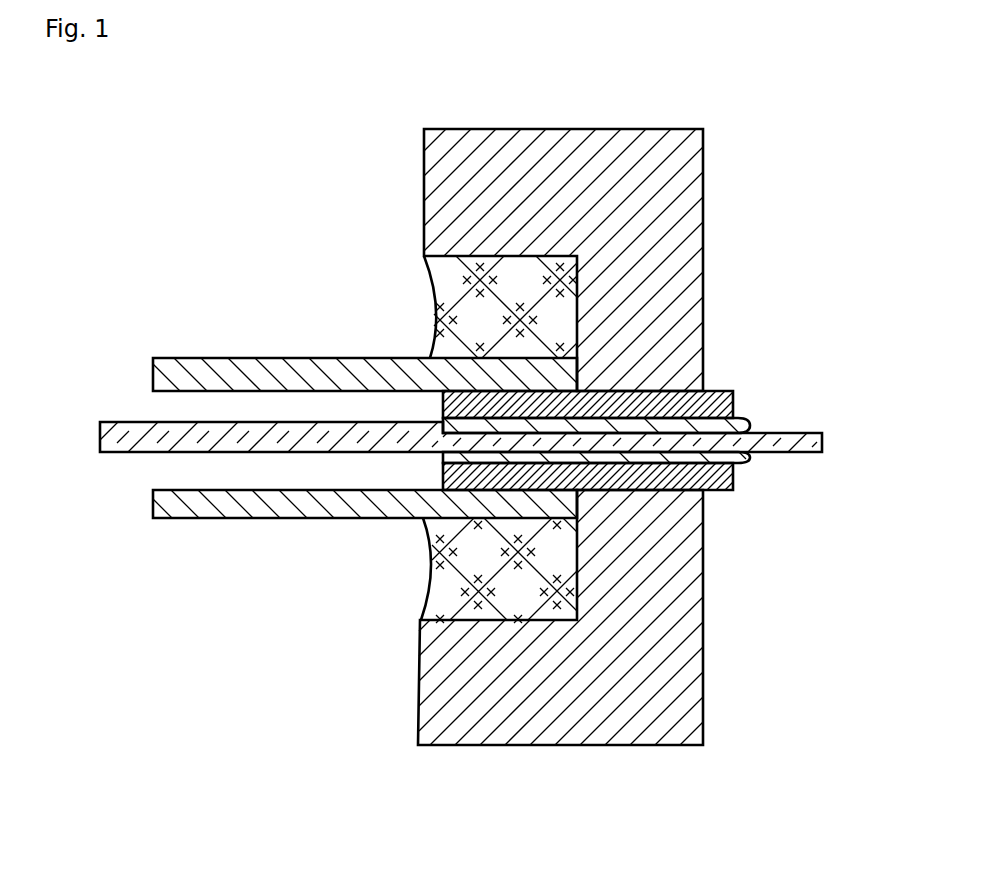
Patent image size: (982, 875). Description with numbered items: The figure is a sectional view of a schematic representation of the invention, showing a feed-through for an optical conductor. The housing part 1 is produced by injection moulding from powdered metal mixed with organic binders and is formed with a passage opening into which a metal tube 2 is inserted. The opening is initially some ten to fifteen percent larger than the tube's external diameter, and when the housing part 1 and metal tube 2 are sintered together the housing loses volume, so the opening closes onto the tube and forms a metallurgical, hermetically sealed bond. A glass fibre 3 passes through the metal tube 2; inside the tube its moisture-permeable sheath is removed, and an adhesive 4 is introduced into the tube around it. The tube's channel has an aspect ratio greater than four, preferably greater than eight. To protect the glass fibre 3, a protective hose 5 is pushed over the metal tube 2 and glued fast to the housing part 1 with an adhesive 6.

The housing part 1 is at (692, 257).
The metal tube 2 is at (732, 392).
The glass fibre 3 is at (120, 440).
The adhesive 4 is at (738, 465).
The protective hose 5 is at (395, 513).
The adhesive 6 is at (477, 585).